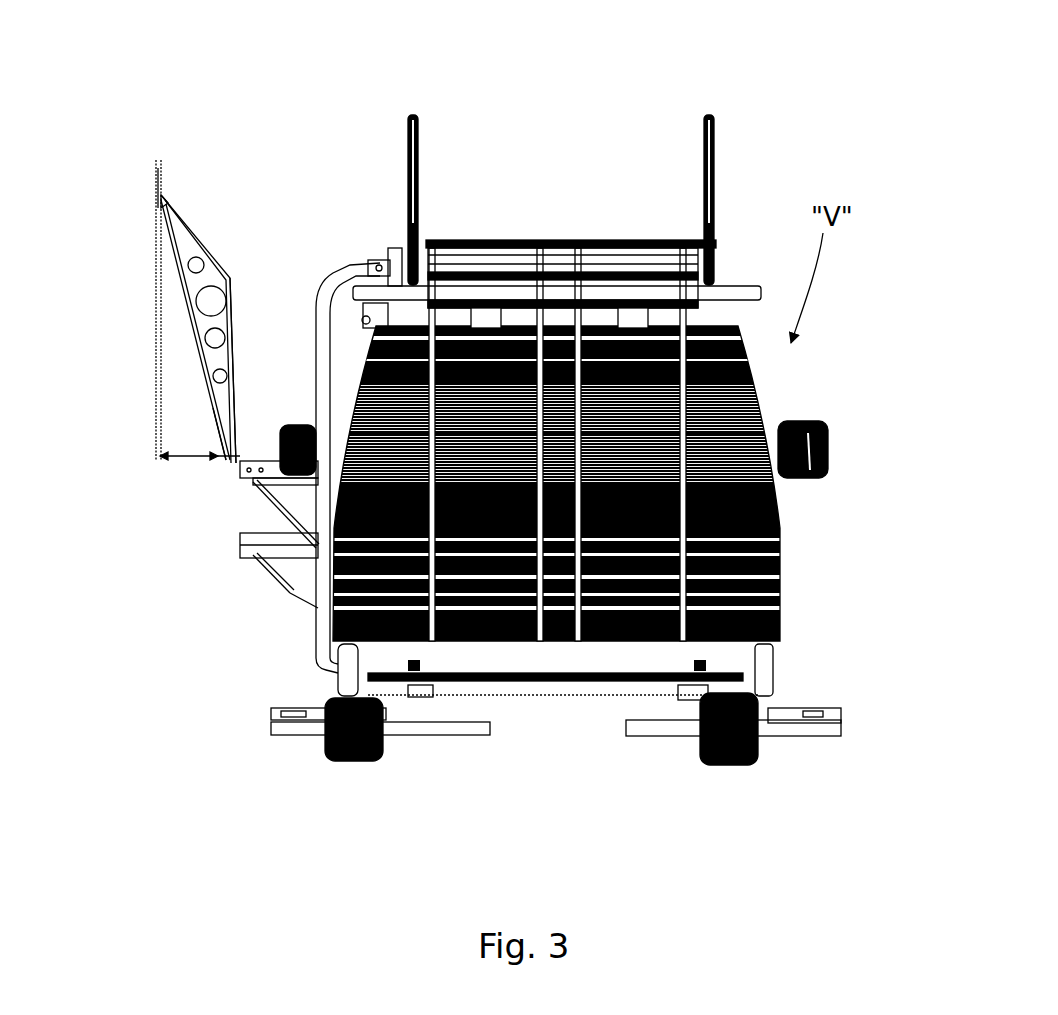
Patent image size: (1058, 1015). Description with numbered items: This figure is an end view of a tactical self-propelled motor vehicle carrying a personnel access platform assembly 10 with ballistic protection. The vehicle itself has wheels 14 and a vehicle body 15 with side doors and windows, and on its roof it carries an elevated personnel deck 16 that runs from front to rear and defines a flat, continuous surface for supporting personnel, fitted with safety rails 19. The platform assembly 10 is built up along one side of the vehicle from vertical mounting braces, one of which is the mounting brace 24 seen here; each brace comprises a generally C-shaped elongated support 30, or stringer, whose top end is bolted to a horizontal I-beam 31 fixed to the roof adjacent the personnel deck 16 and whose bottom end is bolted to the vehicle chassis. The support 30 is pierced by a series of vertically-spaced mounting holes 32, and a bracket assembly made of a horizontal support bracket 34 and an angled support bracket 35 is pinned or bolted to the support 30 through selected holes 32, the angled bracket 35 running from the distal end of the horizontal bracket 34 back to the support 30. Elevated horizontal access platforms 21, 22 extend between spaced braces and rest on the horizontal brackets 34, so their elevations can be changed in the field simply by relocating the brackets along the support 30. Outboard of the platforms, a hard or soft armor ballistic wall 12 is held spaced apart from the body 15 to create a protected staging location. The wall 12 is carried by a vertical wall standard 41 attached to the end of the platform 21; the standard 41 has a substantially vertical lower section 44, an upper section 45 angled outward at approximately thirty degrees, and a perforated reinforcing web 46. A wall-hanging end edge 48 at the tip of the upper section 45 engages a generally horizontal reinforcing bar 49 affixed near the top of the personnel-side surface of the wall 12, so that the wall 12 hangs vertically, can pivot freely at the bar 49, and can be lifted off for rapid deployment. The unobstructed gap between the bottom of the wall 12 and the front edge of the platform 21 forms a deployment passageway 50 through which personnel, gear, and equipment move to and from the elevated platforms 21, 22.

The platform assembly 10 is at (327, 399).
The ballistic wall 12 is at (145, 310).
The wheels 14 is at (318, 755).
The vehicle body 15 is at (757, 388).
The elevated personnel deck 16 is at (550, 232).
The safety rails 19 is at (700, 108).
The access platform 21 is at (262, 450).
The access platform 22 is at (262, 508).
The vertical mounting brace 24 is at (325, 258).
The elongated support 30 is at (320, 340).
The horizontal I-beam 31 is at (382, 242).
The mounting holes 32 is at (320, 605).
The horizontal support bracket 34 is at (268, 552).
The angled support bracket 35 is at (295, 596).
The vertical wall standard 41 is at (198, 225).
The vertical lower section 44 is at (215, 425).
The outwardly angled upper section 45 is at (222, 258).
The perforated reinforcing web 46 is at (200, 352).
The wall-hanging end edge 48 is at (150, 192).
The reinforcing bar 49 is at (160, 185).
The deployment passageway 50 is at (172, 455).